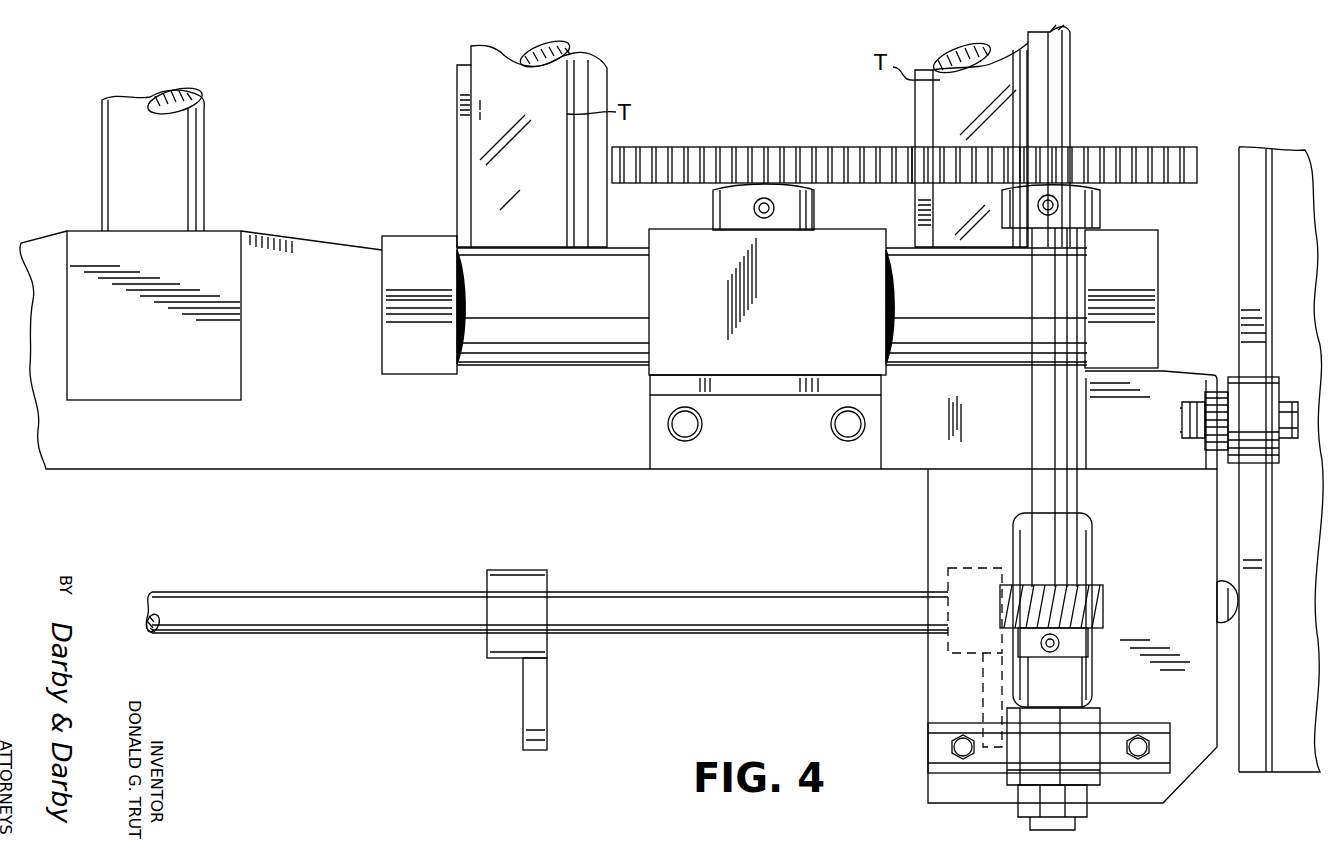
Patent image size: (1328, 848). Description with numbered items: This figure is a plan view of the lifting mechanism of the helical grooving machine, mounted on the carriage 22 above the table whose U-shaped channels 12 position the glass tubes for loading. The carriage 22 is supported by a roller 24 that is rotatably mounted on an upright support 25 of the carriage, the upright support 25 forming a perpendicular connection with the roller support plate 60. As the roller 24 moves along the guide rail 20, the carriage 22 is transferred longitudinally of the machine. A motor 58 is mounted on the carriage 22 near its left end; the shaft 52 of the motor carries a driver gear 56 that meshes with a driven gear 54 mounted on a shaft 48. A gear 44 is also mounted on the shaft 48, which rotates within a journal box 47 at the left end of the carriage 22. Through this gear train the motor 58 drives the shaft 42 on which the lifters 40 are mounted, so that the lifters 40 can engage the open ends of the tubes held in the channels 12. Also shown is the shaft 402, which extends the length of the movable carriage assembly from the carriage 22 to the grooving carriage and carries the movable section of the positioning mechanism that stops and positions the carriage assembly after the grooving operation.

The U-shaped channel 12 is at (459, 148).
The guide rail 20 is at (1282, 162).
The carriage 22 is at (276, 226).
The roller 24 is at (1238, 382).
The upright support 25 is at (1155, 456).
The lifter 40 is at (535, 707).
The shaft 42 is at (390, 620).
The gear 44 is at (1095, 608).
The journal box 47 is at (953, 737).
The shaft 48 is at (1058, 105).
The motor shaft 52 is at (713, 205).
The driven gear 54 is at (1150, 145).
The driver gear 56 is at (717, 165).
The motor 58 is at (794, 322).
The roller support plate 60 is at (611, 470).
The shaft 402 is at (110, 162).